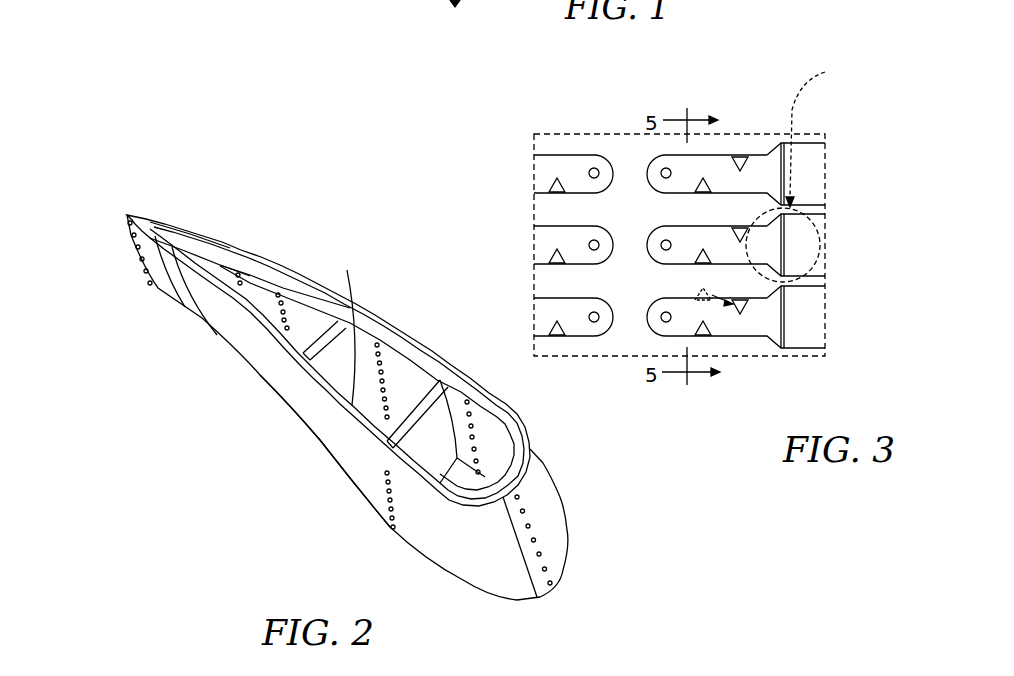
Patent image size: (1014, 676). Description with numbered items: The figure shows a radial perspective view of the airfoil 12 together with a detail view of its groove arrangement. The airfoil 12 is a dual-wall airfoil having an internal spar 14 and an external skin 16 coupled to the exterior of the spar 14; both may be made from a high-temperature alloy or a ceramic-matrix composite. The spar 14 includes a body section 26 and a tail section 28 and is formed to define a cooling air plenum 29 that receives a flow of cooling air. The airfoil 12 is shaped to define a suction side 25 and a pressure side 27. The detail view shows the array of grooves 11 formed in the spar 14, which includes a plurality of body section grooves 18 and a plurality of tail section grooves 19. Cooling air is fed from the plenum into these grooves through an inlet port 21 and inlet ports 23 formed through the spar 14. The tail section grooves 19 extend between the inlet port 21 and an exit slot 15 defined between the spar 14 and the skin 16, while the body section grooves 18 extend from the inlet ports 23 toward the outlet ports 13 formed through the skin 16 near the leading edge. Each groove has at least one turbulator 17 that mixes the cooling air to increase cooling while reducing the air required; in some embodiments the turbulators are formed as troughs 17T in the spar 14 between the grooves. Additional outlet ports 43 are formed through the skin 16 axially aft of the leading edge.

In FIG. 3, the array of grooves 11 is at (721, 141).
In FIG. 2, the airfoil 12 is at (160, 140).
In FIG. 2, the outlet ports 13 is at (532, 493).
In FIG. 2, the spar 14 is at (386, 326).
In FIG. 3, the spar 14 is at (824, 51).
In FIG. 2, the exit slot 15 is at (120, 237).
In FIG. 3, the exit slot 15 is at (807, 144).
In FIG. 2, the skin 16 is at (323, 458).
In FIG. 3, the turbulator 17 is at (757, 305).
In FIG. 3, the troughs 17T is at (706, 292).
In FIG. 3, the body section grooves 18 is at (566, 319).
In FIG. 3, the tail section grooves 19 is at (681, 322).
In FIG. 2, the inlet port 21 is at (238, 270).
In FIG. 3, the inlet port 21 is at (647, 165).
In FIG. 2, the inlet ports 23 is at (278, 290).
In FIG. 3, the inlet ports 23 is at (587, 158).
In FIG. 2, the suction side 25 is at (508, 390).
In FIG. 2, the body section 26 is at (432, 345).
In FIG. 2, the pressure side 27 is at (344, 494).
In FIG. 2, the tail section 28 is at (188, 238).
In FIG. 2, the cooling air plenum 29 is at (360, 350).
In FIG. 2, the outlet ports 43 is at (383, 526).